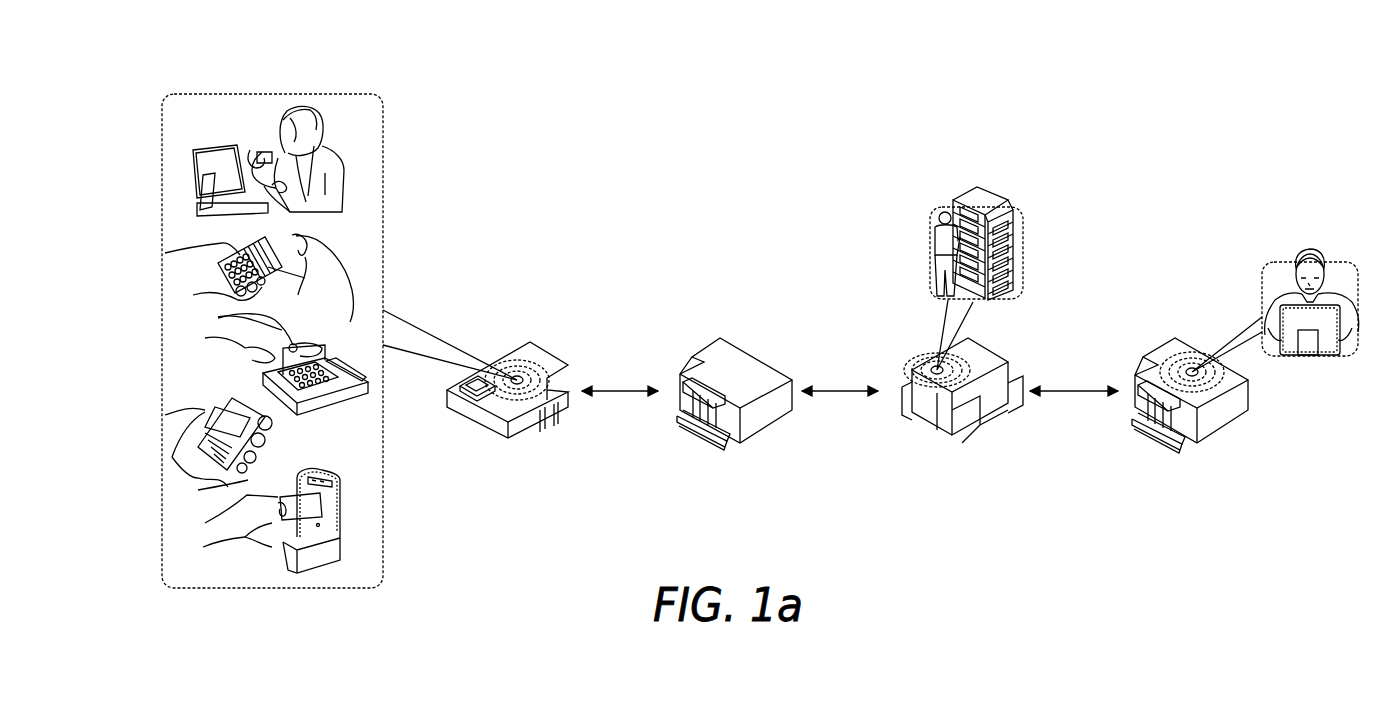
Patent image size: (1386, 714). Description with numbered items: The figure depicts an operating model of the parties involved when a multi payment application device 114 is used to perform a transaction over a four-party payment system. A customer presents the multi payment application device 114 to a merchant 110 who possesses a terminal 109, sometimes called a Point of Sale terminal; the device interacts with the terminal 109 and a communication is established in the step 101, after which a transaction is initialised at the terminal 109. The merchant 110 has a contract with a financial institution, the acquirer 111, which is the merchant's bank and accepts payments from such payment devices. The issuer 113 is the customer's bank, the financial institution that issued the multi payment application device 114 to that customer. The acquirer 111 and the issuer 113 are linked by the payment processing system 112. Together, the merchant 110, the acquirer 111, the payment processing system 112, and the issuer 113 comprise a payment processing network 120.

The communication establishment step 101 is at (334, 76).
The payment processing network 120 is at (707, 174).
The multi payment application device 114 is at (264, 150).
The terminal 109 is at (223, 255).
The merchant 110 is at (540, 356).
The acquirer 111 is at (745, 358).
The payment processing system 112 is at (995, 425).
The issuer 113 is at (1162, 352).